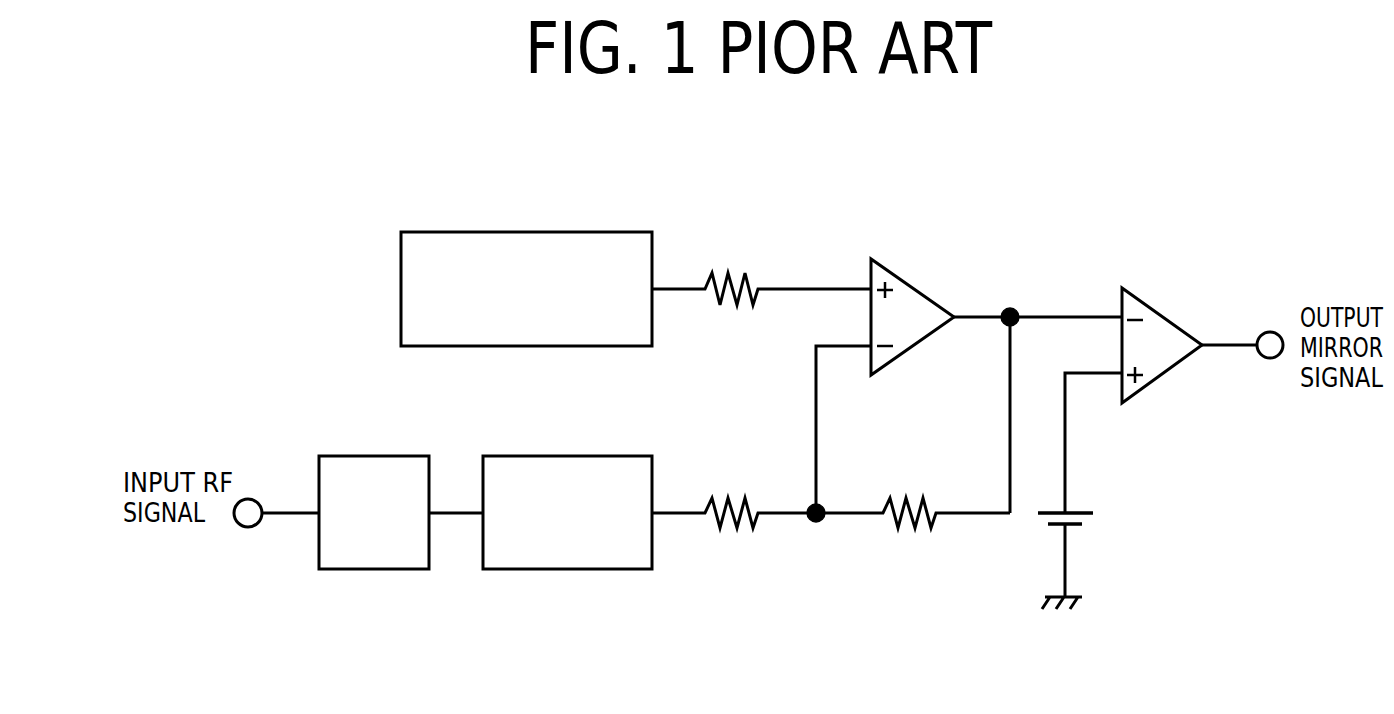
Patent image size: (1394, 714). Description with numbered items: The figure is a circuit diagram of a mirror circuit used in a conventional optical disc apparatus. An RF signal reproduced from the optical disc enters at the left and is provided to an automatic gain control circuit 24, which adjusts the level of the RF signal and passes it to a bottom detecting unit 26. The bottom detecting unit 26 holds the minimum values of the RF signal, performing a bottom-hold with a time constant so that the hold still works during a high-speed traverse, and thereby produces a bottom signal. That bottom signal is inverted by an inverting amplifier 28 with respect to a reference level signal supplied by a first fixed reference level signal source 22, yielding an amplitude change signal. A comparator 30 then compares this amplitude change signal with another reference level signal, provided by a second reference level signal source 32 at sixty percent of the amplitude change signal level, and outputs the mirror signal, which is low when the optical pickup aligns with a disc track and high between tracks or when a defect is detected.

The first fixed reference level signal source 22 is at (573, 231).
The automatic gain control circuit 24 is at (360, 453).
The bottom detecting unit 26 is at (583, 453).
The inverting amplifier 28 is at (908, 283).
The comparator 30 is at (1160, 310).
The second reference level signal source 32 is at (1098, 525).